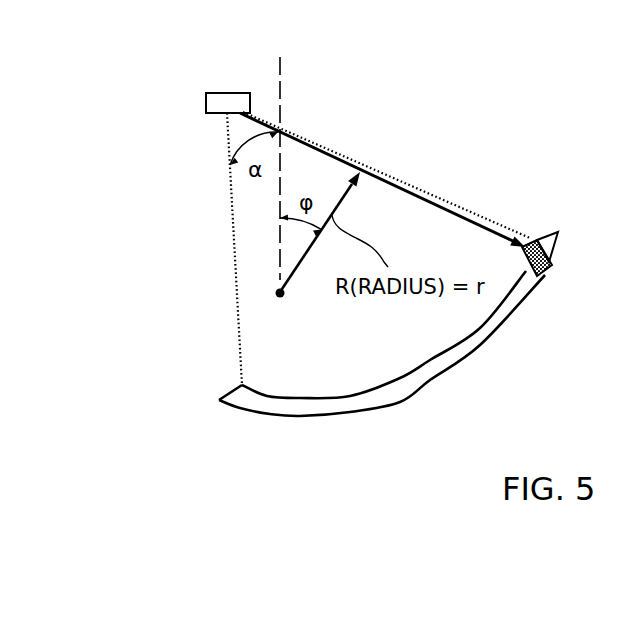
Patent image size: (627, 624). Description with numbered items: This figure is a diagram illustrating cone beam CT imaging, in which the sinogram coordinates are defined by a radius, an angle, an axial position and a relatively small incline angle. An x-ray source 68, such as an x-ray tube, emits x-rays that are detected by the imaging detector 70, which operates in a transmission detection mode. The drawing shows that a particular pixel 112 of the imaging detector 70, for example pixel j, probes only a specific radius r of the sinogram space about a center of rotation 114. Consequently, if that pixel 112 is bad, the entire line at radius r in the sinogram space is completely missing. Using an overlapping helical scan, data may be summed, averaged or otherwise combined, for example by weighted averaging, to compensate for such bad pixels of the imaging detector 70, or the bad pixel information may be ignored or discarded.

The x-ray source 68 is at (205, 103).
The imaging detector 70 is at (460, 360).
The pixel 112 is at (553, 266).
The center of rotation 114 is at (280, 297).